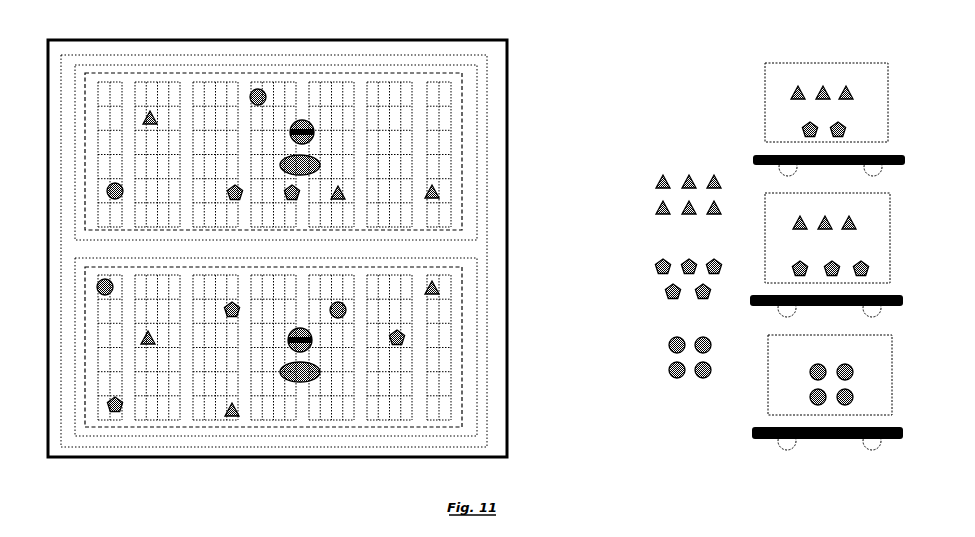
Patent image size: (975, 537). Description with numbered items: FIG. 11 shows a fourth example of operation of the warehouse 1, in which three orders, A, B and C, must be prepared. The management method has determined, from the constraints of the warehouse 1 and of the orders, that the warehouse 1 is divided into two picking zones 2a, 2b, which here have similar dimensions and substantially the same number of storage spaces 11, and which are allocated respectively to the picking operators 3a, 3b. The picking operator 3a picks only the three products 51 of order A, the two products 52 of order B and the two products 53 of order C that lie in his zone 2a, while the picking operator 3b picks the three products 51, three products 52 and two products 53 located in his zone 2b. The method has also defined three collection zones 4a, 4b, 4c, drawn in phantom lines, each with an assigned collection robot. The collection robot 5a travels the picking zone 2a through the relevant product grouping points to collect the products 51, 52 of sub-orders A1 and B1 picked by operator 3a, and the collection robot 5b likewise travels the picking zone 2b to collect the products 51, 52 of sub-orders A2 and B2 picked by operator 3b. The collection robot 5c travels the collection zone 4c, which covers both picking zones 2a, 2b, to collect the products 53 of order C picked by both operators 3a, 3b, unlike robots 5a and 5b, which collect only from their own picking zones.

The warehouse 1 is at (508, 67).
The picking zone 2a is at (462, 135).
The picking zone 2b is at (462, 300).
The picking operator 3a is at (297, 120).
The picking operator 3b is at (300, 382).
The collection zone 4a is at (477, 163).
The collection zone 4b is at (477, 425).
The collection zone 4c is at (487, 197).
The storage spaces 11 is at (398, 365).
The products 51 is at (143, 120).
The products 52 is at (235, 185).
The products 53 is at (108, 191).
The collection robot 5a is at (893, 152).
The collection robot 5b is at (895, 293).
The collection robot 5c is at (895, 426).